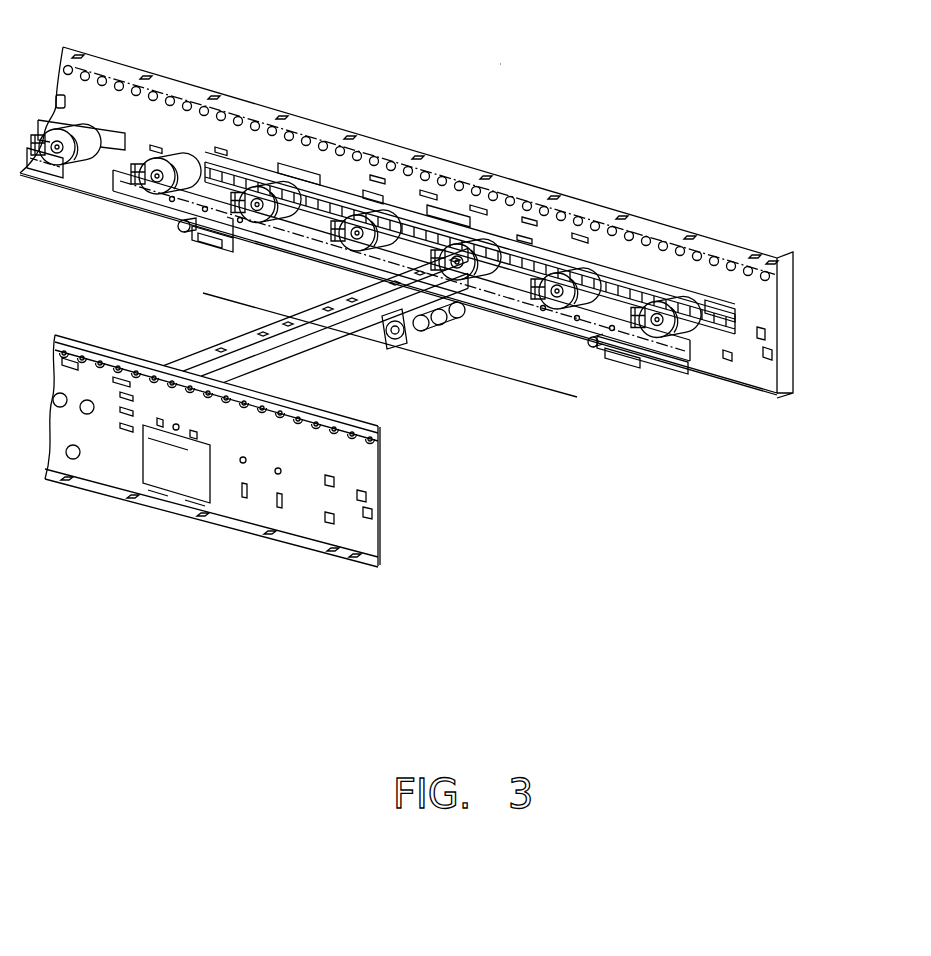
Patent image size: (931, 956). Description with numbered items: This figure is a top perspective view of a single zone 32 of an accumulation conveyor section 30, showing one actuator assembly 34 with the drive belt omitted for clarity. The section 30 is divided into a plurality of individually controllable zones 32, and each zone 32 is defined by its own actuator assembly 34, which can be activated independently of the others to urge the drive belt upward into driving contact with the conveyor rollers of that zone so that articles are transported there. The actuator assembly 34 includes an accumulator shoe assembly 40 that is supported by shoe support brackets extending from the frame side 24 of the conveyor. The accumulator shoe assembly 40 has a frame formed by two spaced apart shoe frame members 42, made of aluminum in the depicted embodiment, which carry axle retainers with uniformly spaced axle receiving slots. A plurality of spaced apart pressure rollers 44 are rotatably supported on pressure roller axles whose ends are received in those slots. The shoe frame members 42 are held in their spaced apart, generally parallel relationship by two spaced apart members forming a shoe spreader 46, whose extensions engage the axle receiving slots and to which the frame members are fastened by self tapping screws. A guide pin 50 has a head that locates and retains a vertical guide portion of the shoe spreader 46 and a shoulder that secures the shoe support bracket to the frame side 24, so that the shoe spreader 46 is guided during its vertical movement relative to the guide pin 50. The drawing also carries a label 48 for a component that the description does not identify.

The frame side 24 is at (294, 117).
The accumulation conveyor section 30 is at (503, 62).
The zone 32 is at (53, 207).
The actuator assembly 34 is at (498, 262).
The accumulator shoe assembly 40 is at (690, 368).
The shoe frame members 42 is at (718, 308).
The pressure rollers 44 is at (385, 236).
The shoe spreader 46 is at (212, 165).
The roller bracket 48 is at (190, 213).
The guide pin 50 is at (178, 227).